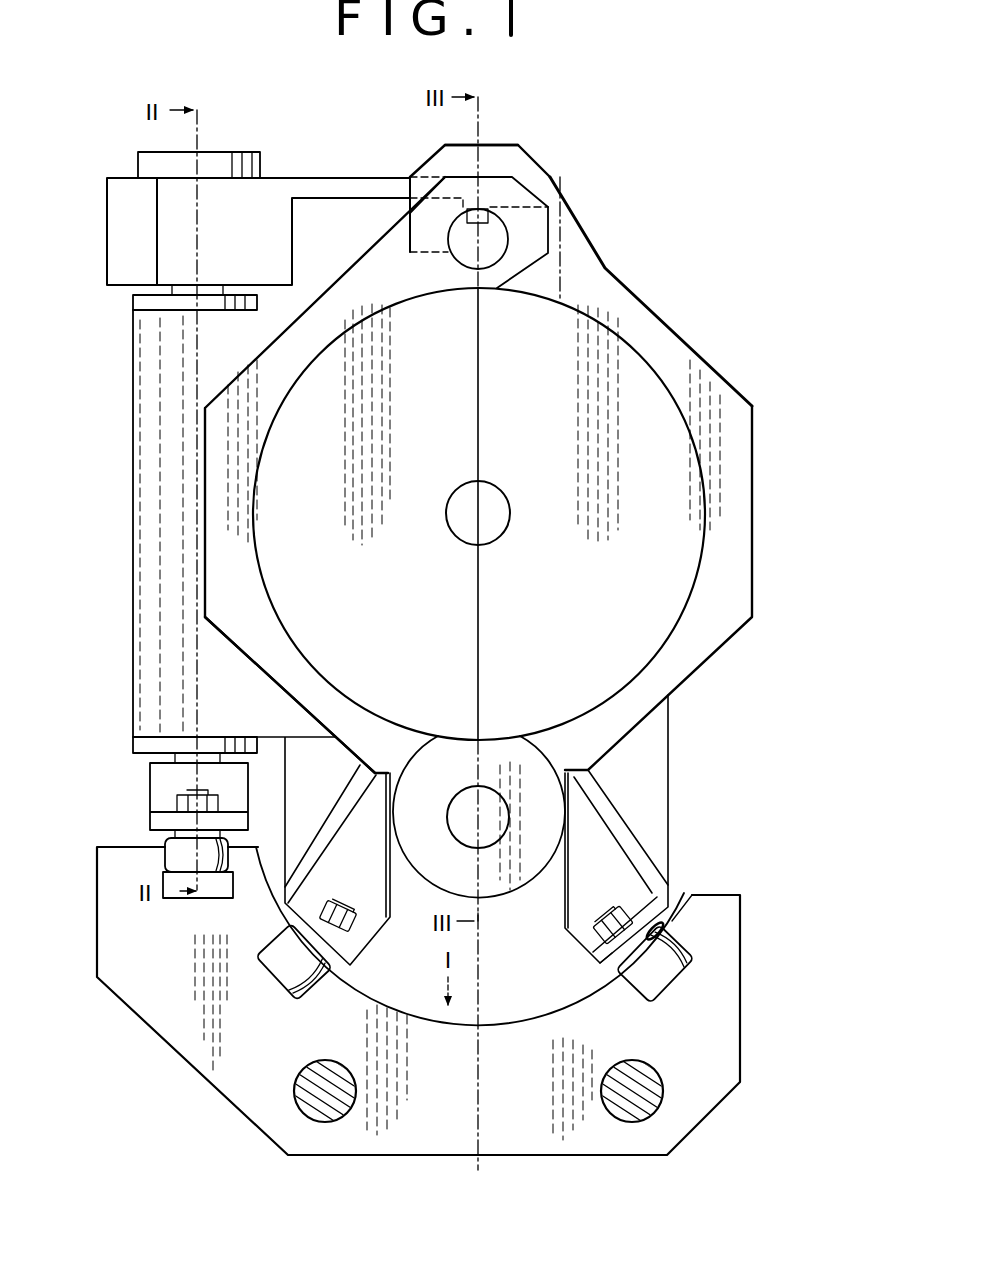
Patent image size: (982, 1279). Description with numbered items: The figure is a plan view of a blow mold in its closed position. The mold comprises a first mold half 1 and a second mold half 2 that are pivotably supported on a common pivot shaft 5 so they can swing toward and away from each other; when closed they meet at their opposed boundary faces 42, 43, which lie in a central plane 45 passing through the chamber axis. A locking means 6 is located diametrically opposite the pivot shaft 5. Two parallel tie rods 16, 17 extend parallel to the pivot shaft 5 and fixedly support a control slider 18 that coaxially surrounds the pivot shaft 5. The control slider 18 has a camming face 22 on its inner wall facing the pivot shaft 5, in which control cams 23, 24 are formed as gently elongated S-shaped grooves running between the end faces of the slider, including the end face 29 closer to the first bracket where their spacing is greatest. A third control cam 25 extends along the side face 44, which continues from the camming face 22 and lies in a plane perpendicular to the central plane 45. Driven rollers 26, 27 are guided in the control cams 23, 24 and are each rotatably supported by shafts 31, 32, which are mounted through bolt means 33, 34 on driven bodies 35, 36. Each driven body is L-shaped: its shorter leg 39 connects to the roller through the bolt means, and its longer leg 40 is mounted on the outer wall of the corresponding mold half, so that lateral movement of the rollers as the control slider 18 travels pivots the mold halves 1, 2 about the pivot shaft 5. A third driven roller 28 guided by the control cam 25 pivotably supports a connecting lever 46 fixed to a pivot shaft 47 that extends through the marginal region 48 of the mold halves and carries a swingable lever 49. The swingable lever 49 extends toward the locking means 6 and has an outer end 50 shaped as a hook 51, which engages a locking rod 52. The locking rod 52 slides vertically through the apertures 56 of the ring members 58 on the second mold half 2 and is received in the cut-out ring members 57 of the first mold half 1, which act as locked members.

The first mold half 1 is at (735, 423).
The second mold half 2 is at (302, 687).
The pivot shaft 5 is at (478, 817).
The locking means 6 is at (557, 159).
The tie rod 16 is at (657, 1103).
The tie rod 17 is at (303, 1104).
The control slider 18 is at (722, 1035).
The camming face 22 is at (520, 1027).
The control cam 23 is at (648, 1004).
The control cam 24 is at (303, 1007).
The third control cam 25 is at (218, 897).
The driven roller 26 is at (663, 960).
The driven roller 27 is at (280, 950).
The driven roller 28 is at (180, 853).
The end face 29 is at (480, 1120).
The shaft 31 is at (660, 926).
The shaft 32 is at (338, 960).
The bolt means 33 is at (613, 905).
The bolt means 34 is at (320, 897).
The driven body 35 is at (565, 902).
The driven body 36 is at (376, 877).
The shorter leg 39 is at (605, 945).
The longer leg 40 is at (612, 803).
The boundary face 42 is at (484, 655).
The boundary face 43 is at (474, 411).
The side face 44 is at (122, 847).
The central plane 45 is at (479, 1077).
The connecting lever 46 is at (160, 777).
The pivot shaft 47 is at (197, 213).
The marginal region 48 is at (160, 572).
The swingable lever 49 is at (283, 190).
The outer end 50 is at (490, 195).
The hook 51 is at (568, 198).
The locking rod 52 is at (500, 238).
The aperture 56 is at (472, 272).
The cut-out ring member 57 is at (488, 143).
The ring member 58 is at (528, 252).